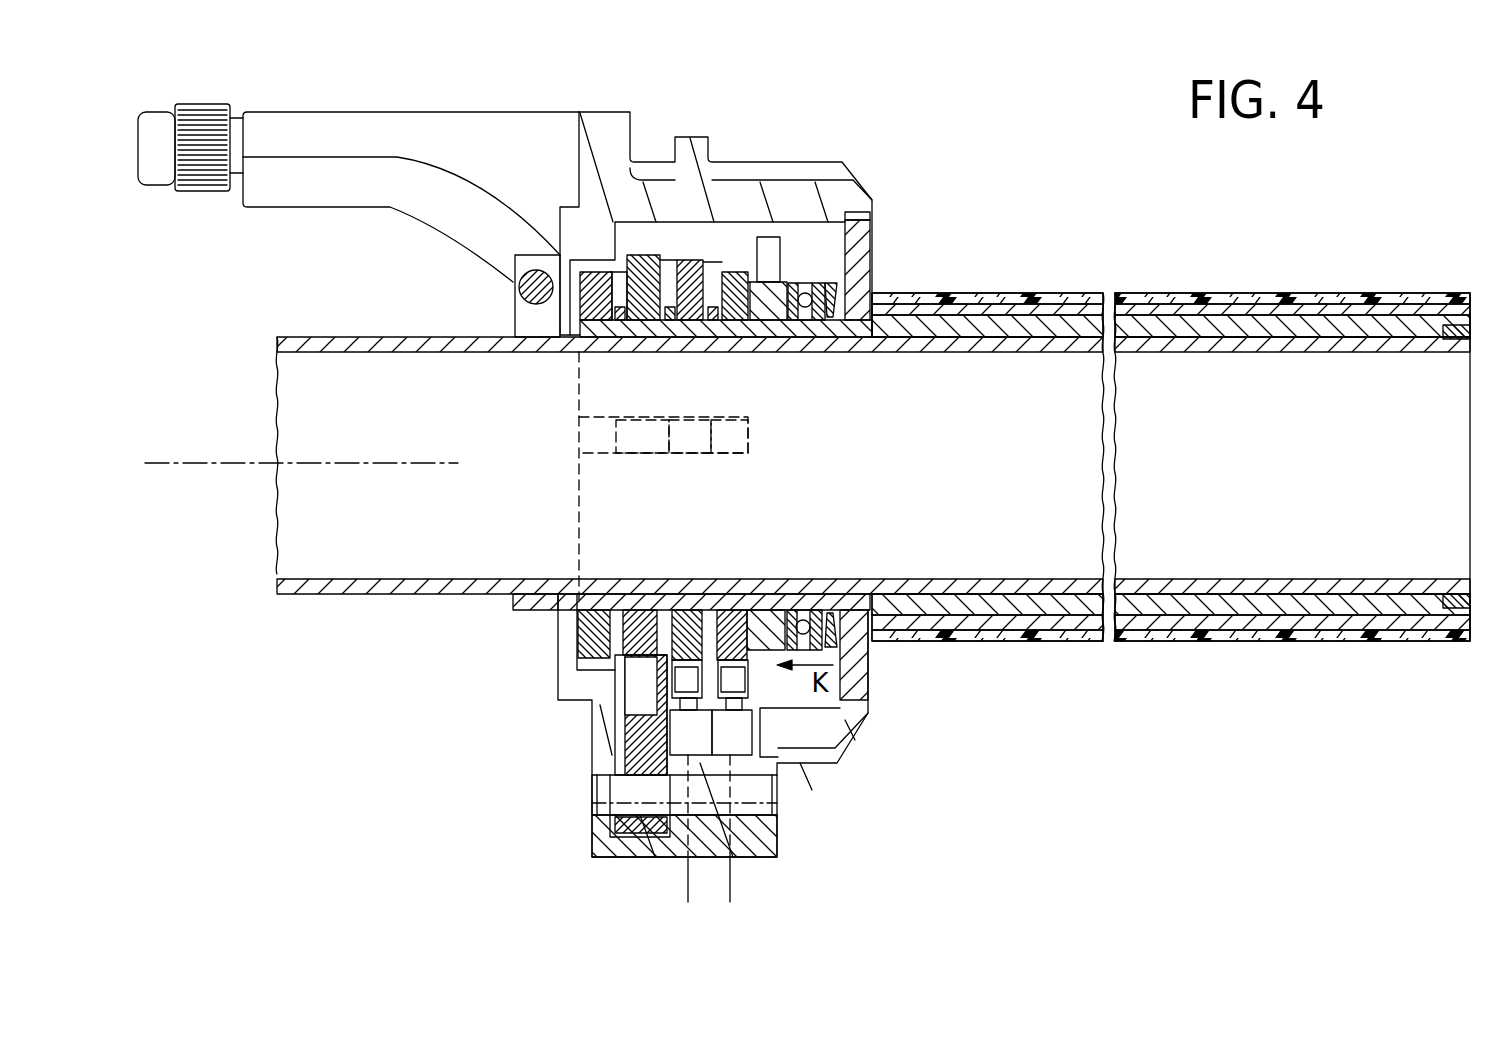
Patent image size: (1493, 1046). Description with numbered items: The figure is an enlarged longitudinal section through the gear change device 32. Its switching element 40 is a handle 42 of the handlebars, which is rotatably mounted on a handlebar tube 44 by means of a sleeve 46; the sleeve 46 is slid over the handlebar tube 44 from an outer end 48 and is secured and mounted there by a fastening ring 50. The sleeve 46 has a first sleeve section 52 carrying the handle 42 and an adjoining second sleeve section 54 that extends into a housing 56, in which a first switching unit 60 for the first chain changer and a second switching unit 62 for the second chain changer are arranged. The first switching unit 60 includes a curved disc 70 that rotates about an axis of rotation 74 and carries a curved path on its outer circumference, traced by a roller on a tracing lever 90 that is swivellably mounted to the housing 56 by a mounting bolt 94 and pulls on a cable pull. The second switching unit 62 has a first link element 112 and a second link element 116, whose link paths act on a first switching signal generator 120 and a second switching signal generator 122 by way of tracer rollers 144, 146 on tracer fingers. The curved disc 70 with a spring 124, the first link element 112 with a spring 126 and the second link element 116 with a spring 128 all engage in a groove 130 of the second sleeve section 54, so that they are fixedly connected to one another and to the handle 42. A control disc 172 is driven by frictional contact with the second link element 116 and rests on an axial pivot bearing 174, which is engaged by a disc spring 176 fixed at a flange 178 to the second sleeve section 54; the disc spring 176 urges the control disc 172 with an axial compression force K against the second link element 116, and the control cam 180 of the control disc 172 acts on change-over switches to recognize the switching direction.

The gear change device 32 is at (975, 135).
The switching element 40 is at (1003, 287).
The handle 42 is at (1268, 298).
The handlebar tube 44 is at (1247, 349).
The sleeve 46 is at (1327, 318).
The outer end 48 is at (1447, 343).
The fastening ring 50 is at (1455, 593).
The first sleeve section 52 is at (1370, 325).
The second sleeve section 54 is at (648, 337).
The housing 56 is at (583, 153).
The first switching unit 60 is at (672, 72).
The second switching unit 62 is at (677, 72).
The curved disc 70 is at (642, 277).
The axis of rotation 74 is at (202, 463).
The tracing lever 90 is at (637, 765).
The mounting bolt 94 is at (617, 795).
The first link element 112 is at (688, 275).
The second link element 116 is at (736, 298).
The first switching signal generator 120 is at (690, 737).
The second switching signal generator 122 is at (725, 742).
The spring 124 is at (637, 445).
The spring 126 is at (692, 445).
The spring 128 is at (733, 445).
The groove 130 is at (603, 450).
The tracer roller 144 is at (690, 677).
The tracer roller 146 is at (736, 673).
The control disc 172 is at (770, 245).
The axial pivot bearing 174 is at (836, 296).
The disc spring 176 is at (857, 225).
The flange 178 is at (858, 280).
The control cam 180 is at (805, 296).